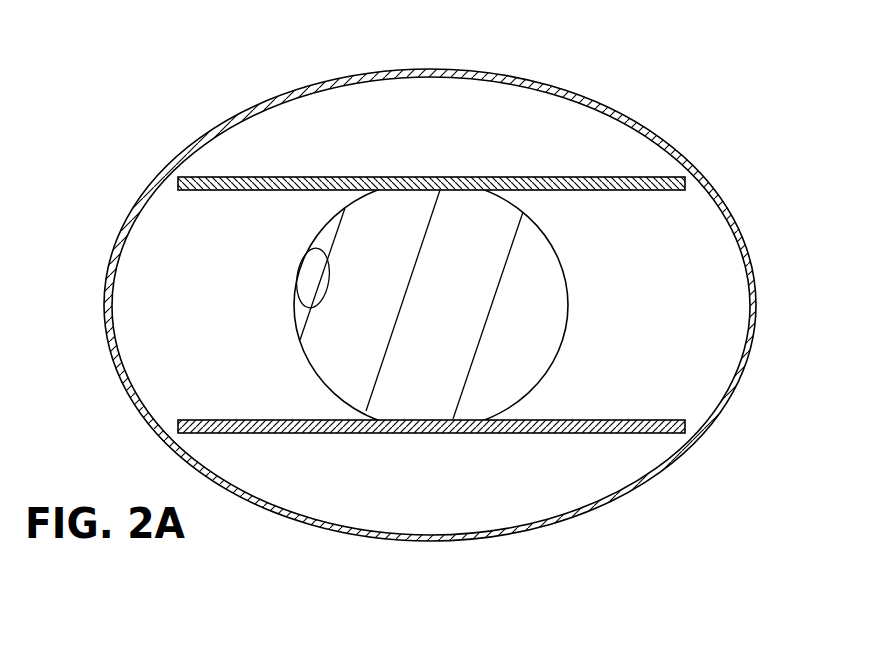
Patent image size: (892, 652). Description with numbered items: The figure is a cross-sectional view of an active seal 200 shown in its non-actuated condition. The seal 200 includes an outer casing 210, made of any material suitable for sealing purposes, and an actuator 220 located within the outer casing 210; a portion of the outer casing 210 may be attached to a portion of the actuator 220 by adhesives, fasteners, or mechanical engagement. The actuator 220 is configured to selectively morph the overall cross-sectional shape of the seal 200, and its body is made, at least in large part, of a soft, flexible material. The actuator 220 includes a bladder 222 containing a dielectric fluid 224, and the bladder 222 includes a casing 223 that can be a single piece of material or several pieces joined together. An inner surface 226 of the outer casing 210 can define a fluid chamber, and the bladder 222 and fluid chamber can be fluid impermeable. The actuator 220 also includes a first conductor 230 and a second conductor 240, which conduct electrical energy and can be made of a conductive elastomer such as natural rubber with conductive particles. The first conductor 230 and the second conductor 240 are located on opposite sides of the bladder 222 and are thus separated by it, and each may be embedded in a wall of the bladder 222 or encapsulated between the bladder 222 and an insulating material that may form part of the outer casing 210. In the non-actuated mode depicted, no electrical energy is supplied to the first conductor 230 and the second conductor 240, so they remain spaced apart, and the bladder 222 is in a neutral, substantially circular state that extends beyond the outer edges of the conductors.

The seal 200 is at (143, 75).
The outer casing 210 is at (593, 100).
The actuator 220 is at (647, 160).
The bladder 222 is at (553, 234).
The casing 223 is at (570, 302).
The dielectric fluid 224 is at (537, 348).
The inner surface 226 is at (312, 303).
The first conductor 230 is at (271, 177).
The second conductor 240 is at (297, 433).